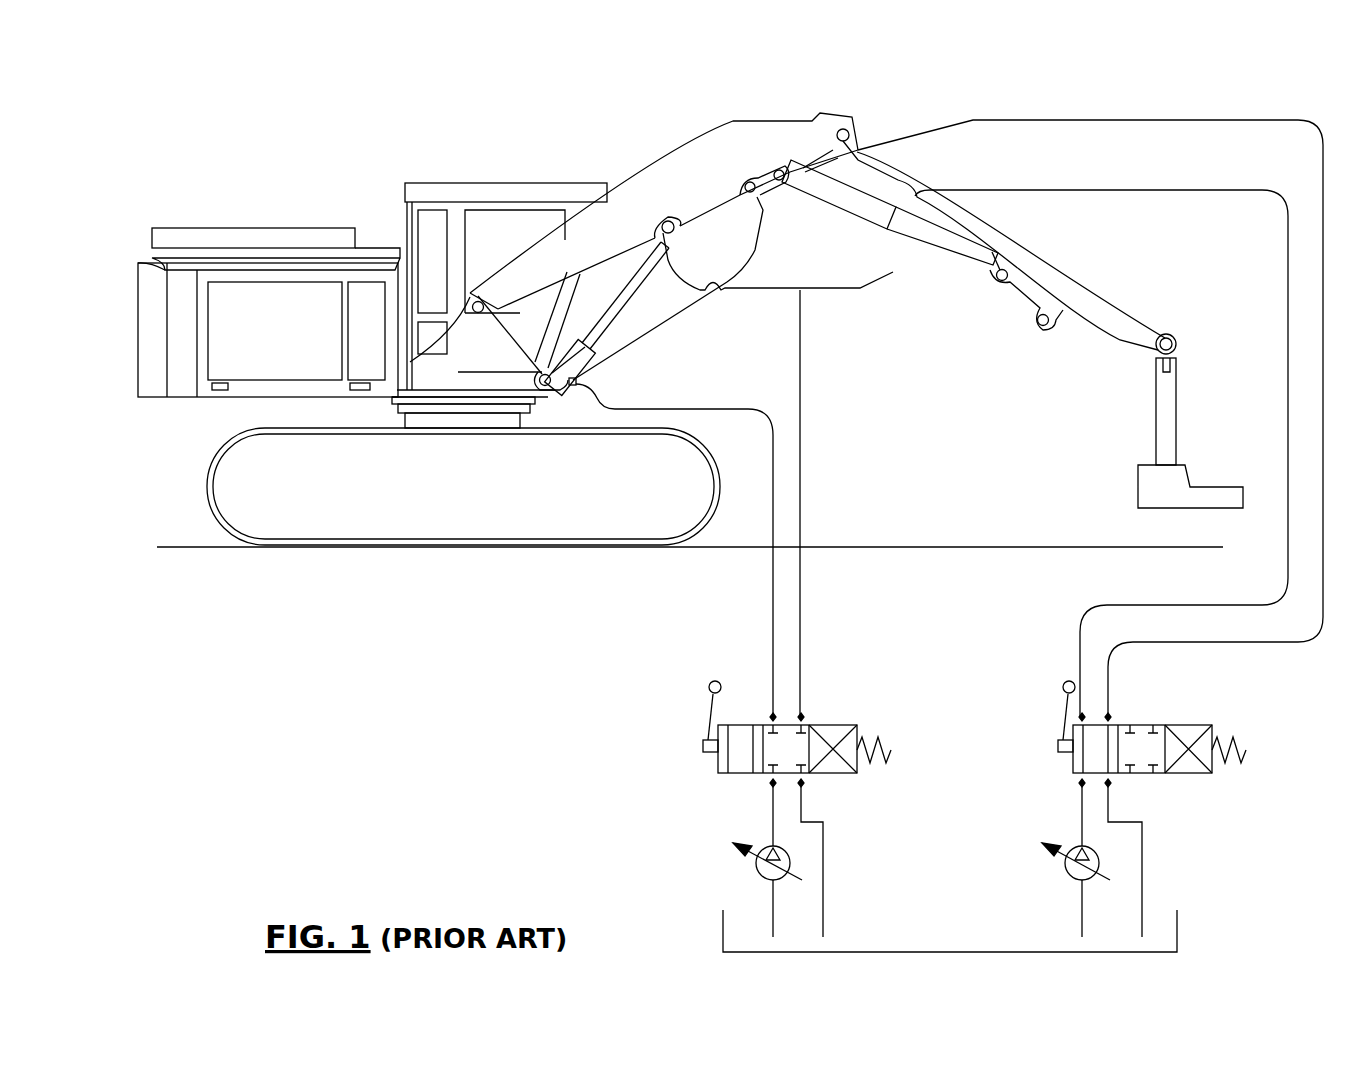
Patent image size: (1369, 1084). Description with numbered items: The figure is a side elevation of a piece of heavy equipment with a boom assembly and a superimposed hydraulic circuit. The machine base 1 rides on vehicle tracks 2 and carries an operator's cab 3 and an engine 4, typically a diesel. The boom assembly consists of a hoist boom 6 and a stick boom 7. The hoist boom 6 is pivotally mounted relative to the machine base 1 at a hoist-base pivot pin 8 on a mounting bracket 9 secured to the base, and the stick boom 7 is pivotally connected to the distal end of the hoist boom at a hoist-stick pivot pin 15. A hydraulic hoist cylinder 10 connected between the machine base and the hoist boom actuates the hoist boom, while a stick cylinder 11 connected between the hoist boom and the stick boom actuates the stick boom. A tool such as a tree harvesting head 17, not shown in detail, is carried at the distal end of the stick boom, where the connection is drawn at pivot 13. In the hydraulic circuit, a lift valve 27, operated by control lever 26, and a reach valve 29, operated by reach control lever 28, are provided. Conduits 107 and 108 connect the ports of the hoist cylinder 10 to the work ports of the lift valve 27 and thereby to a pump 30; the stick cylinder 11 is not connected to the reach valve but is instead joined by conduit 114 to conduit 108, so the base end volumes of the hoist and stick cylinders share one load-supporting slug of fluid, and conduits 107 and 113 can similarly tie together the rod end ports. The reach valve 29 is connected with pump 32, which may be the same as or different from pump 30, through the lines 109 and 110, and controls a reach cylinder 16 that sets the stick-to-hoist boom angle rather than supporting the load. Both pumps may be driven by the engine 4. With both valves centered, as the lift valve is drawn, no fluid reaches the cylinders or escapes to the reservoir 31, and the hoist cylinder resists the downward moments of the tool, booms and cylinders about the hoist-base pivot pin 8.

The machine base 1 is at (378, 102).
The vehicle tracks 2 is at (217, 457).
The operator's cab 3 is at (487, 183).
The engine 4 is at (137, 300).
The hoist boom 6 is at (663, 167).
The stick boom 7 is at (927, 172).
The hoist-base pivot pin 8 is at (472, 298).
The mounting bracket 9 is at (476, 335).
The hydraulic hoist cylinder 10 is at (613, 248).
The stick cylinder 11 is at (1000, 285).
The implement pivot 13 is at (1163, 333).
The hoist-stick pivot pin 15 is at (850, 118).
The reach cylinder 16 is at (830, 190).
The tree harvesting head 17 is at (1156, 440).
The control lever 26 is at (705, 725).
The lift valve 27 is at (857, 726).
The reach control lever 28 is at (1060, 725).
The reach valve 29 is at (1215, 730).
The pump 30 is at (740, 840).
The reservoir 31 is at (722, 915).
The pump 32 is at (1050, 845).
The conduit 107 is at (800, 578).
The conduit 108 is at (773, 578).
The hydraulic line 109 is at (1262, 190).
The hydraulic line 110 is at (1160, 120).
The conduit 113 is at (838, 290).
The conduit 114 is at (640, 358).